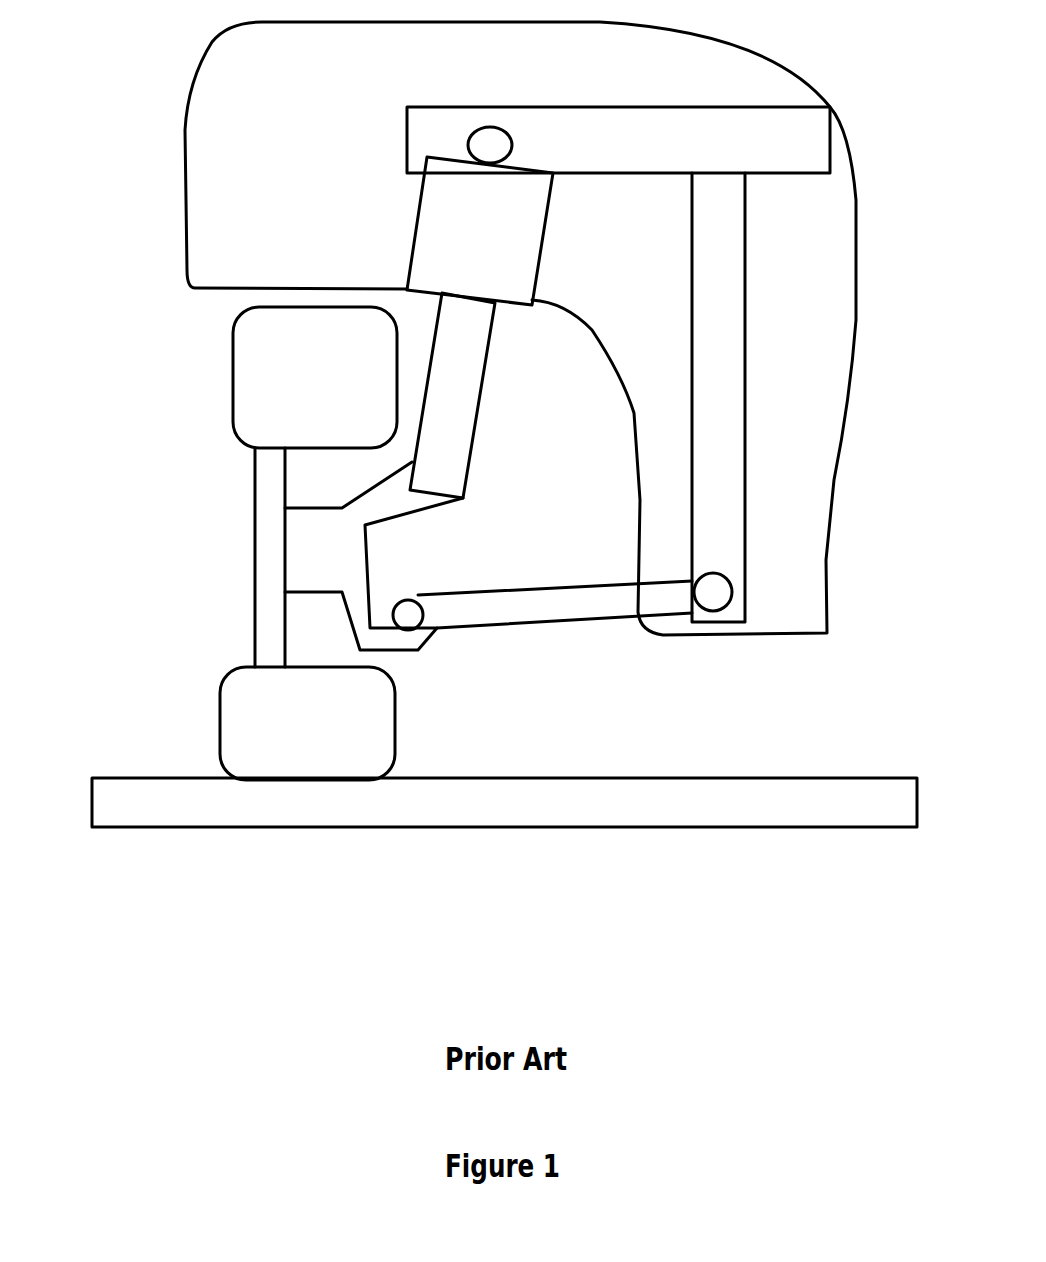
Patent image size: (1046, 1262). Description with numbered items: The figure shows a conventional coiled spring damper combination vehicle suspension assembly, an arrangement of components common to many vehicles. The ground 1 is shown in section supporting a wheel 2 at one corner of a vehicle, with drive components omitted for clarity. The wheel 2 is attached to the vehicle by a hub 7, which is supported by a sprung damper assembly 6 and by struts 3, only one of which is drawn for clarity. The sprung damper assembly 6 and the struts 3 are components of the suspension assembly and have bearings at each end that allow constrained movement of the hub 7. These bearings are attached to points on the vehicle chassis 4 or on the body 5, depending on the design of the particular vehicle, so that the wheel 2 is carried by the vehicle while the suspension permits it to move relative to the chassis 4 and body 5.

The ground 1 is at (549, 804).
The wheel 2 is at (250, 402).
The struts 3 is at (574, 624).
The vehicle chassis 4 is at (722, 292).
The body 5 is at (240, 236).
The sprung damper assembly 6 is at (475, 391).
The hub 7 is at (314, 545).